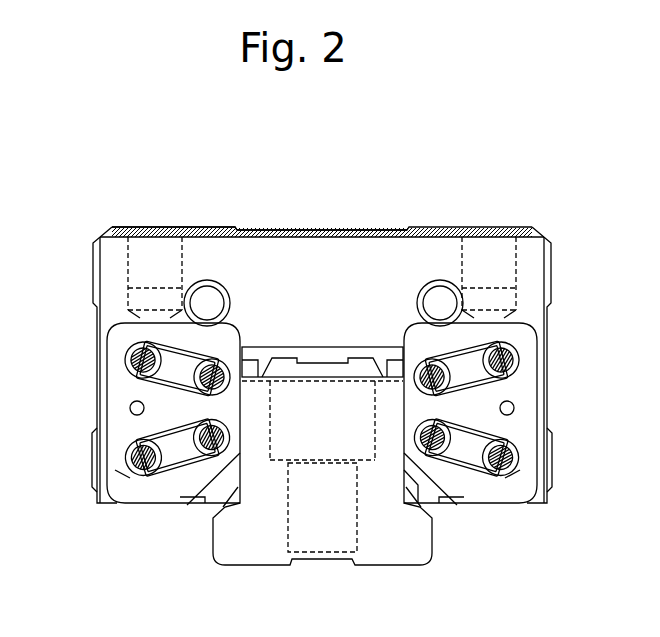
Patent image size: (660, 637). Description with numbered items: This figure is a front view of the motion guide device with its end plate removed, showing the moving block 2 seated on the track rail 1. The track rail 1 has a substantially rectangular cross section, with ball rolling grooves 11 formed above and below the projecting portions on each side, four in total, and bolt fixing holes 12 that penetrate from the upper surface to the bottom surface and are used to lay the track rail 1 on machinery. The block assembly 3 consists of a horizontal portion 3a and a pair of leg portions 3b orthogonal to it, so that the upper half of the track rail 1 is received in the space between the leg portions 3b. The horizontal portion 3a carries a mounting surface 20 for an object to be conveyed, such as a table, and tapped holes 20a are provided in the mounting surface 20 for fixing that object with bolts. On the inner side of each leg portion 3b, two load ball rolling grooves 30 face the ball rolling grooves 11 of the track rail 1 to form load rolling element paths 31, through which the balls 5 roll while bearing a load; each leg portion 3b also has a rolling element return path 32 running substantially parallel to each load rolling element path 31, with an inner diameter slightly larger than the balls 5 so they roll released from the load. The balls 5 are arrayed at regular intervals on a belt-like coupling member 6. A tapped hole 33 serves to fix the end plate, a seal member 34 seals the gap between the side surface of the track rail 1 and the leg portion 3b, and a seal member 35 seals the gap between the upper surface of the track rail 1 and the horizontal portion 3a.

The track rail 1 is at (251, 572).
The moving block 2 is at (571, 187).
The block assembly 3 is at (410, 229).
The horizontal portion 3a is at (339, 250).
The leg portions 3b is at (97, 413).
The balls 5 is at (130, 478).
The coupling member 6 is at (485, 478).
The ball rolling grooves 11 is at (170, 470).
The bolt fixing holes 12 is at (355, 530).
The mounting surface 20 is at (230, 228).
The tapped holes 20a is at (182, 258).
The load ball rolling grooves 30 is at (150, 376).
The load rolling element paths 31 is at (441, 492).
The rolling element return path 32 is at (130, 357).
The tapped hole 33 is at (203, 297).
The seal member 34 is at (222, 512).
The seal member 35 is at (318, 354).